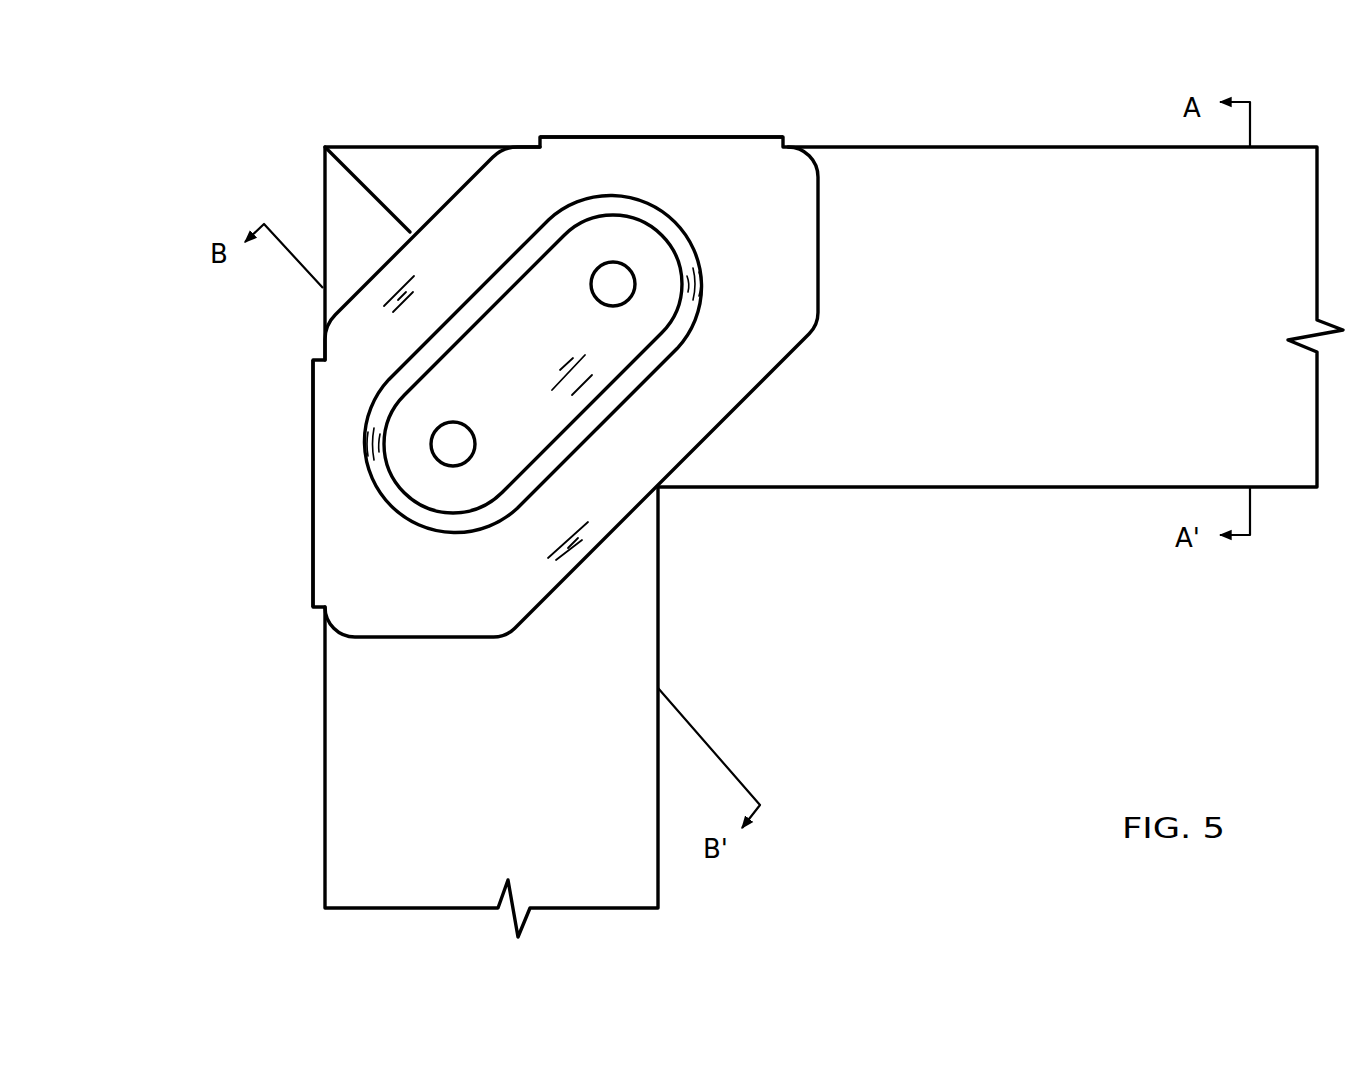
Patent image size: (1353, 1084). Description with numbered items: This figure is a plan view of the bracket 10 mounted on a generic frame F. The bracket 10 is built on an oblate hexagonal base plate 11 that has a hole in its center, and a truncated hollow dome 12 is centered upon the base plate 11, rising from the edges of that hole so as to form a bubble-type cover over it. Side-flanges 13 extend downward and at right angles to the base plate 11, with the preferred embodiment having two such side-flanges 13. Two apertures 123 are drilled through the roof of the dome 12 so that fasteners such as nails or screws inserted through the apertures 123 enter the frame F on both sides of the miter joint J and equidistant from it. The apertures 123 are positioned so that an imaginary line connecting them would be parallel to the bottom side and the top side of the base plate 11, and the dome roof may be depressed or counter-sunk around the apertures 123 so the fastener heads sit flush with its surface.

The bracket 10 is at (301, 552).
The base plate 11 is at (347, 400).
The dome 12 is at (361, 452).
The side-flange 13 is at (650, 133).
The apertures 123 is at (613, 284).
The miter joint J is at (360, 185).
The frame F is at (322, 798).